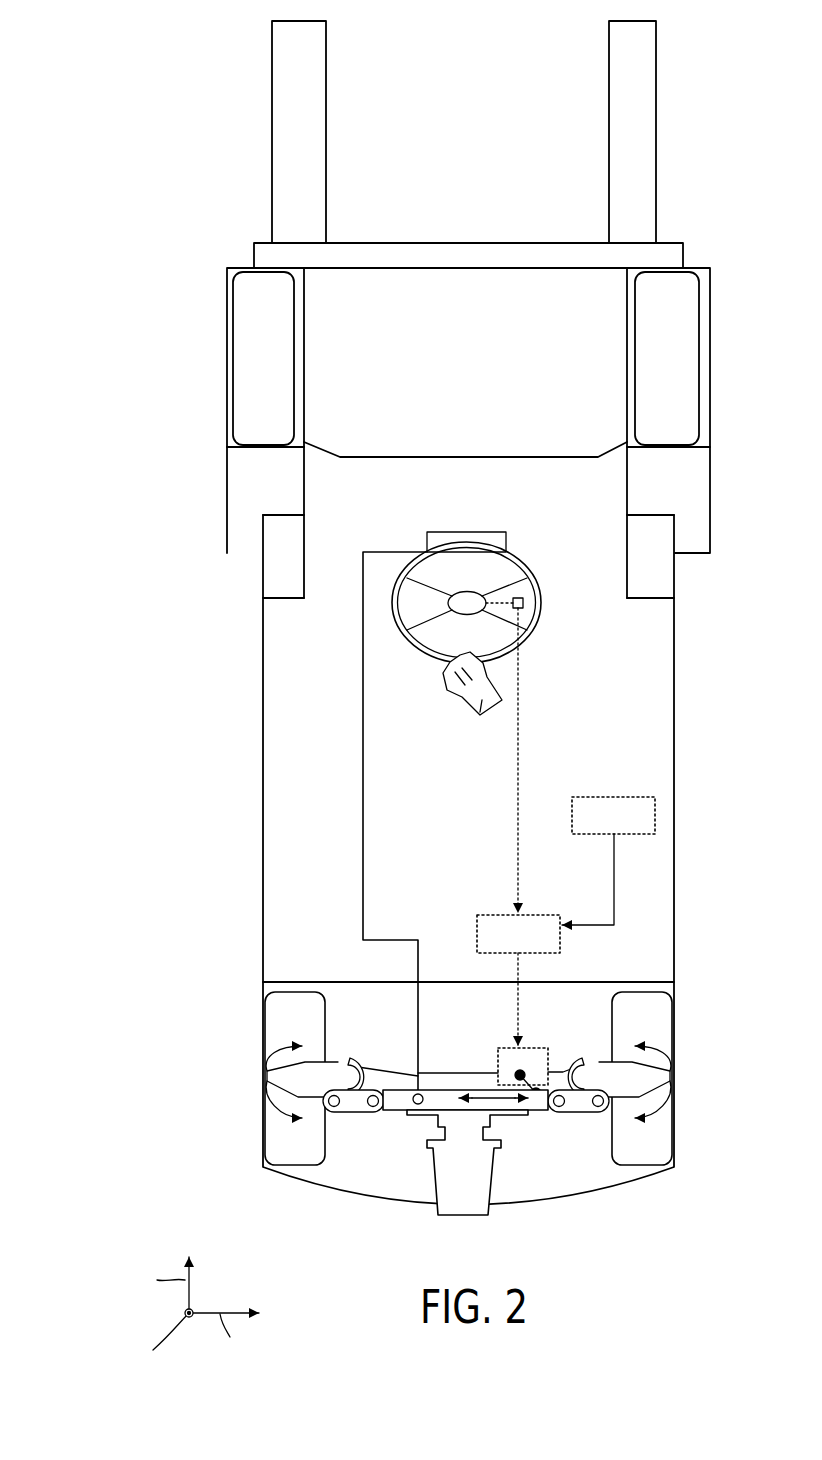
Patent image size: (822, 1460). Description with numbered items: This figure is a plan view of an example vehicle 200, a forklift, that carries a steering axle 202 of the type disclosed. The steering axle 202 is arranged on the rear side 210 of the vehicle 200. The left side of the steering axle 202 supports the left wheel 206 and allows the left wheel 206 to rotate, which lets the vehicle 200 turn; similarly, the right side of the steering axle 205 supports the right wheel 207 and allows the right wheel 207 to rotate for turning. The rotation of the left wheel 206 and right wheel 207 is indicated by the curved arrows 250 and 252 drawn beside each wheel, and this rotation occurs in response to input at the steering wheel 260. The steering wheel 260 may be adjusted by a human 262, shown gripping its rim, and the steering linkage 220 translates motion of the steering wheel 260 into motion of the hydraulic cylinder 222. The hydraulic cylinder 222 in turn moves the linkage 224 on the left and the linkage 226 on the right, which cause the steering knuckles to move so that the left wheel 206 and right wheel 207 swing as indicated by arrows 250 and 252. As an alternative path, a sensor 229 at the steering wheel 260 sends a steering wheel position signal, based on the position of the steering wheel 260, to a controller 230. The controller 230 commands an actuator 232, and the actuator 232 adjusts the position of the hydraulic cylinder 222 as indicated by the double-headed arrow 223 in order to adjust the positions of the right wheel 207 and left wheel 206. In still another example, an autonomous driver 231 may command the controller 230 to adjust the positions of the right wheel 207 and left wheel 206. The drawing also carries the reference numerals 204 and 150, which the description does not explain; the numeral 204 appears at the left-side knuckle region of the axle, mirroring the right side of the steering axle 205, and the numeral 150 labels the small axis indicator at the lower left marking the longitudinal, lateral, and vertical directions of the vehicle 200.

The vehicle 200 is at (190, 50).
The steering linkage 220 is at (363, 738).
The steering wheel 260 is at (507, 553).
The sensor 229 is at (523, 603).
The human 262 is at (478, 713).
The autonomous driver 231 is at (632, 828).
The controller 230 is at (537, 948).
The actuator 232 is at (512, 1048).
The steering axle 202 is at (430, 1036).
The left wheel 206 is at (325, 1032).
The right wheel 207 is at (610, 1030).
The arrow 250 is at (270, 1062).
The arrow 252 is at (657, 1044).
The left steering knuckle 204 is at (375, 1048).
The right side of steering axle 205 is at (569, 1072).
The linkage 224 is at (350, 1109).
The linkage 226 is at (583, 1111).
The hydraulic cylinder 222 is at (434, 1102).
The arrow 223 is at (493, 1099).
The rear side 210 is at (352, 1217).
The coordinate axes 150 is at (148, 1243).